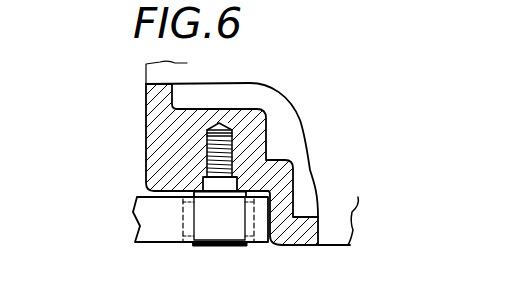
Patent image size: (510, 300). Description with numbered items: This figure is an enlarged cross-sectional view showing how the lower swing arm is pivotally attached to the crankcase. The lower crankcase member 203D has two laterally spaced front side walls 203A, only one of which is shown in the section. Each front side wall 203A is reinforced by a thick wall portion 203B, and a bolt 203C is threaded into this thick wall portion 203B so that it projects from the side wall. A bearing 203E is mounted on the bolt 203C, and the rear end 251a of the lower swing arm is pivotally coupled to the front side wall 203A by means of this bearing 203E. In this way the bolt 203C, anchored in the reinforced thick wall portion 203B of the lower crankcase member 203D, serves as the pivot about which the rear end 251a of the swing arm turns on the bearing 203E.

The front side wall 203A is at (297, 232).
The thick wall portion 203B is at (173, 142).
The bolt 203C is at (234, 233).
The lower crankcase member 203D is at (145, 98).
The bearing 203E is at (184, 252).
The rear end of the lower swing arm 251a is at (155, 226).